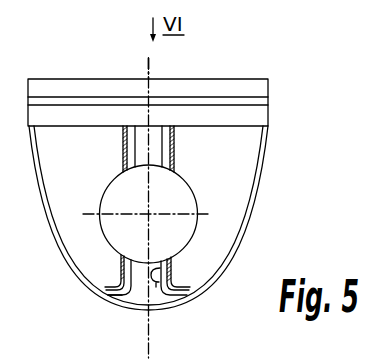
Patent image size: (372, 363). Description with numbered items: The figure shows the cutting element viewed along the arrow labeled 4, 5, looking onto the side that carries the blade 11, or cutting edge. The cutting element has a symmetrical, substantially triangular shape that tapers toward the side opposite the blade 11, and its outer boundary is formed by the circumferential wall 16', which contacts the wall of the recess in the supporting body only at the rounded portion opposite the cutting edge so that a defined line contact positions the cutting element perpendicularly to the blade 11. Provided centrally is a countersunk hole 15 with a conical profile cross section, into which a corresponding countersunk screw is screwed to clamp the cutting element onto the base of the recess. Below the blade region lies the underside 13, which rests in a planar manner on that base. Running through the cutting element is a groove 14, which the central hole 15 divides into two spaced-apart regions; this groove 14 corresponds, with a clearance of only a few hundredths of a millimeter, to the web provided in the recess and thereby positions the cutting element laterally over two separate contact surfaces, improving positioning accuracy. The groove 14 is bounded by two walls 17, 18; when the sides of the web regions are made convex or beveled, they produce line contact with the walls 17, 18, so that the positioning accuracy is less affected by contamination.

The axis / assembly 4 is at (151, 65).
The axis / assembly 5 is at (111, 62).
The blade 11 is at (209, 90).
The underside 13 is at (236, 167).
The groove 14 is at (155, 292).
The countersunk hole 15 is at (173, 209).
The circumferential wall 16' is at (176, 218).
The wall of the groove 17 is at (166, 278).
The wall of the groove 18 is at (132, 296).